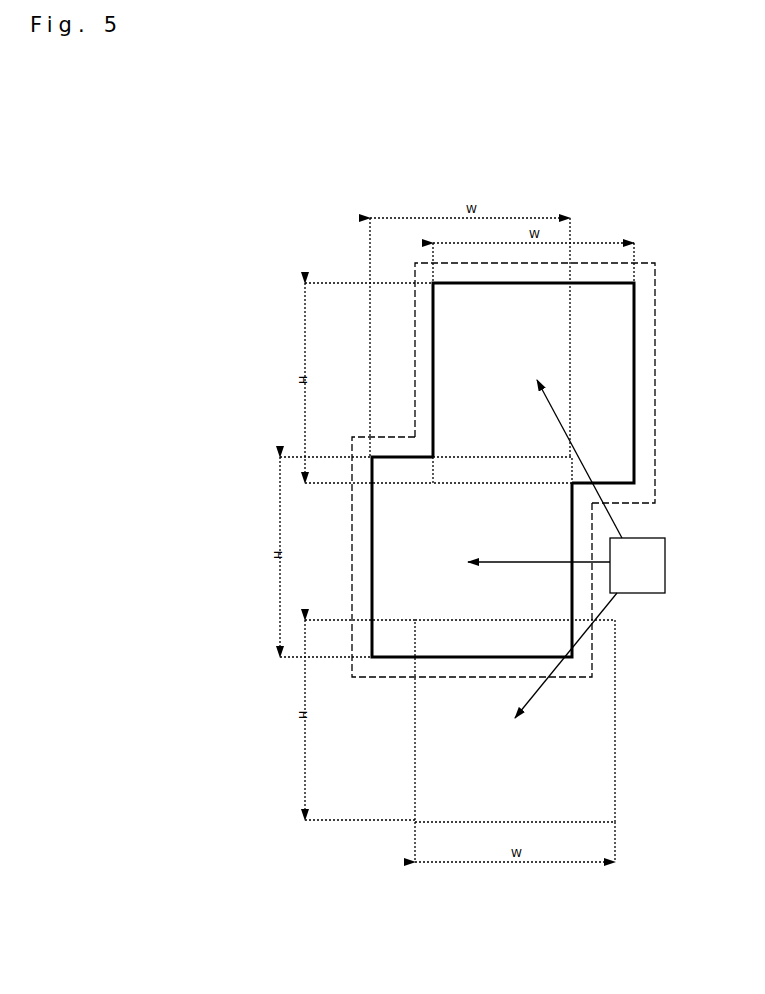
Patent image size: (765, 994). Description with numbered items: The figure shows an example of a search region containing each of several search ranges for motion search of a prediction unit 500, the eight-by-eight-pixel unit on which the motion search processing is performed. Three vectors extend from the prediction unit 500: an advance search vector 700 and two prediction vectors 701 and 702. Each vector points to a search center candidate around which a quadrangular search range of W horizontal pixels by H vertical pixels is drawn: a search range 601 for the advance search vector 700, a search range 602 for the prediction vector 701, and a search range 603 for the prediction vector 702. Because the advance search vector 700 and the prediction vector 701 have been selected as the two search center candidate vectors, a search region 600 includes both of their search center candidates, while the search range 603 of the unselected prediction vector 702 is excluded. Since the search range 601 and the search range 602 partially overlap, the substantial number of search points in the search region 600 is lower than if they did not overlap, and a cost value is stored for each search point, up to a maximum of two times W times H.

The prediction unit 500 is at (639, 594).
The search region 600 is at (655, 384).
The search range 601 is at (452, 383).
The search range 602 is at (381, 551).
The search range 603 is at (416, 738).
The advance search vector 700 is at (577, 458).
The prediction vector 701 is at (546, 563).
The prediction vector 702 is at (542, 688).